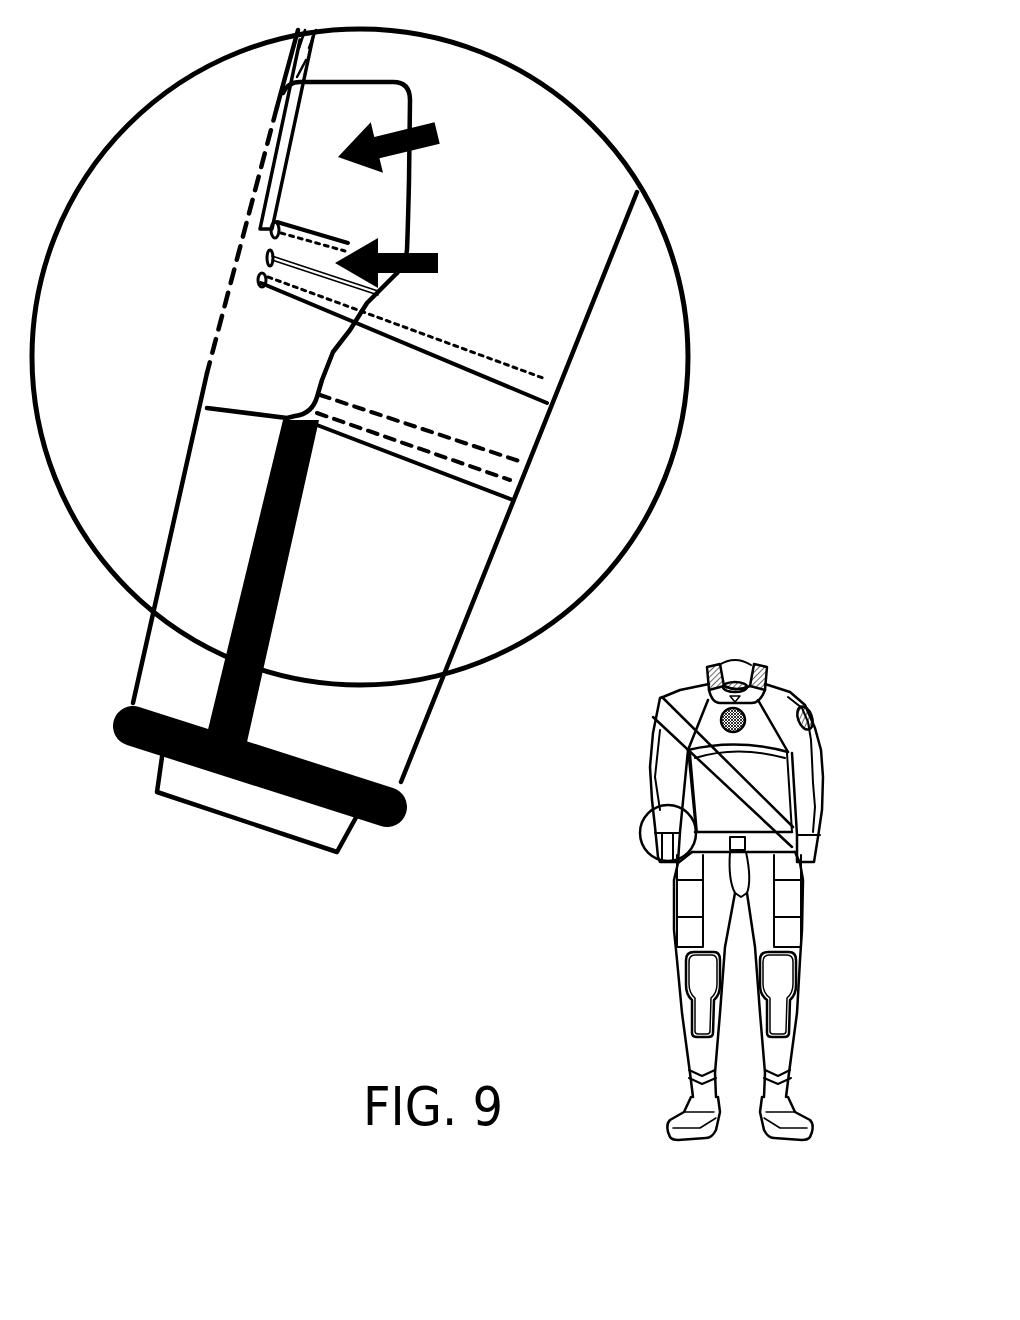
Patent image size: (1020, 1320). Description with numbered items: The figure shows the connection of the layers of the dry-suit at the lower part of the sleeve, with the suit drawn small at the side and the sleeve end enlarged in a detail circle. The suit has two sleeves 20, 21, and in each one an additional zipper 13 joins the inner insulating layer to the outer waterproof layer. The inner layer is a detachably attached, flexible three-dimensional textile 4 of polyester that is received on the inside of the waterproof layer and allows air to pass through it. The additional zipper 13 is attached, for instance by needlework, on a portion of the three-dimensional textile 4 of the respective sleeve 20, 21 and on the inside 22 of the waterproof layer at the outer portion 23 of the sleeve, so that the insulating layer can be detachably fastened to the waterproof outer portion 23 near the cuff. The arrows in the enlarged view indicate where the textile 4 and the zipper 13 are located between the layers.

The three-dimensional textile 4 is at (370, 177).
The additional zipper 13 is at (402, 307).
The inside of the waterproof layer 22 is at (523, 425).
The outer portion of the sleeve 23 is at (387, 738).
The sleeve 20 is at (660, 787).
The sleeve 21 is at (810, 785).